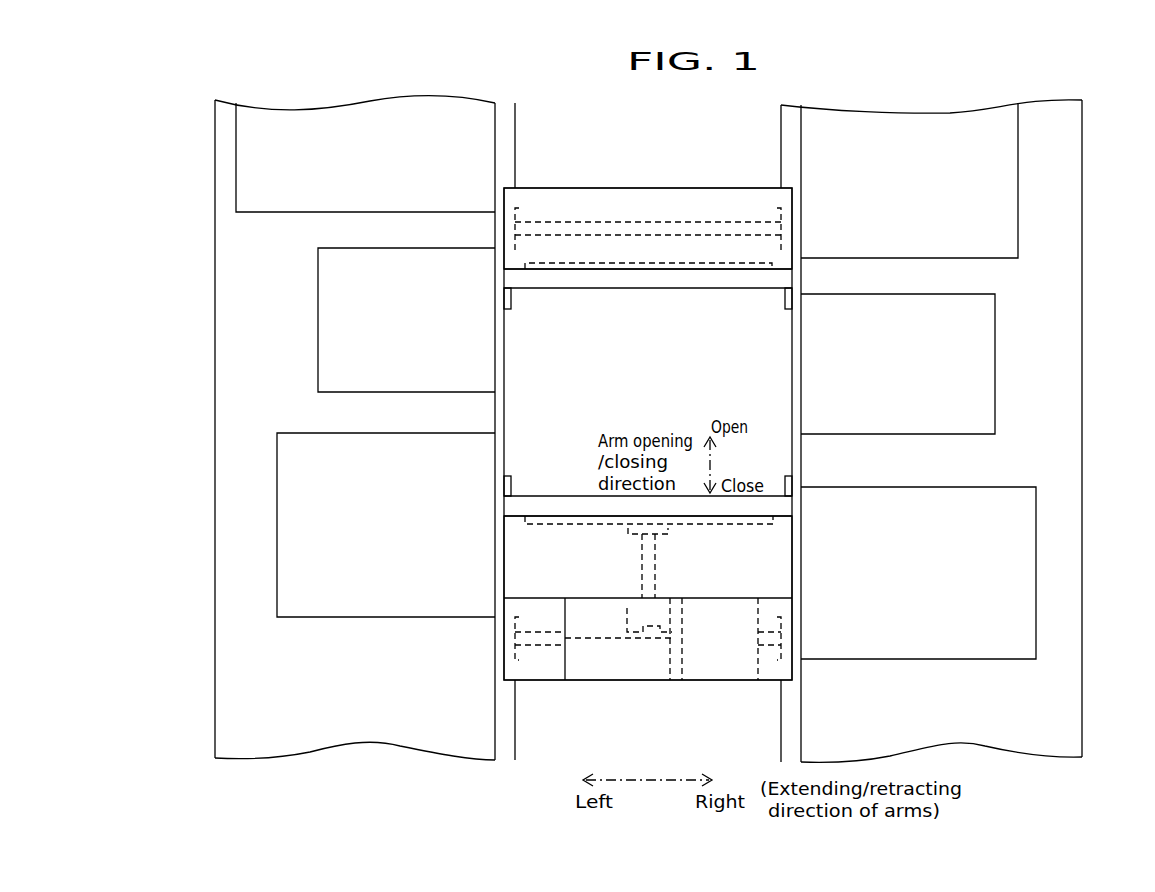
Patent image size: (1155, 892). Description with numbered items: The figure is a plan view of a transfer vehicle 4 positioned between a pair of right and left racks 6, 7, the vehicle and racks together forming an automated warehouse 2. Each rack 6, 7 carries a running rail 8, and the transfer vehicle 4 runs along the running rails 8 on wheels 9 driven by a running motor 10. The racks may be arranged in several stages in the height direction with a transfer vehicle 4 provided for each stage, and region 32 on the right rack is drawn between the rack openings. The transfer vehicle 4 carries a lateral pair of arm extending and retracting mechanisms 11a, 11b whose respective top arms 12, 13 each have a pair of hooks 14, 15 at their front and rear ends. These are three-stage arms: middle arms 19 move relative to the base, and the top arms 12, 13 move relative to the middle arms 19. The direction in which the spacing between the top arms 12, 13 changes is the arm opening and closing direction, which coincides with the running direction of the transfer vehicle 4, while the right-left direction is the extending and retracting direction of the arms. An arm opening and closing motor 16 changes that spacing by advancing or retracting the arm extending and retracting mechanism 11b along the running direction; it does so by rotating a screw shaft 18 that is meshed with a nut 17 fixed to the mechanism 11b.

The automated warehouse 2 is at (482, 815).
The transfer vehicle 4 is at (632, 740).
The rack 6 is at (1060, 407).
The rack 7 is at (232, 365).
The running rail 8 is at (508, 143).
The wheel 9 is at (504, 223).
The running motor 10 is at (718, 665).
The arm extending and retracting mechanism 11a is at (645, 208).
The arm extending and retracting mechanism 11b is at (730, 580).
The top arm 12 is at (672, 283).
The top arm 13 is at (545, 505).
The hook 14 is at (785, 302).
The hook 15 is at (511, 302).
The arm opening and closing motor 16 is at (612, 665).
The nut 17 is at (630, 617).
The screw shaft 18 is at (656, 568).
The middle arm 19 is at (627, 271).
The opening 32 is at (972, 366).